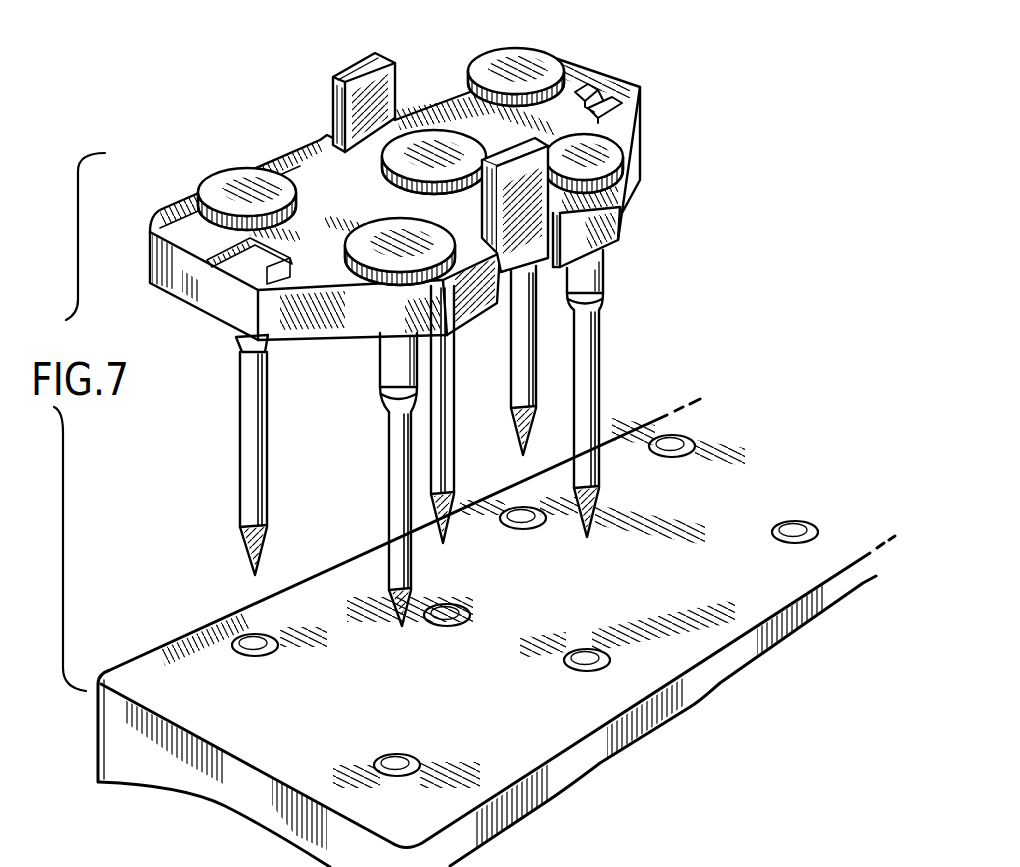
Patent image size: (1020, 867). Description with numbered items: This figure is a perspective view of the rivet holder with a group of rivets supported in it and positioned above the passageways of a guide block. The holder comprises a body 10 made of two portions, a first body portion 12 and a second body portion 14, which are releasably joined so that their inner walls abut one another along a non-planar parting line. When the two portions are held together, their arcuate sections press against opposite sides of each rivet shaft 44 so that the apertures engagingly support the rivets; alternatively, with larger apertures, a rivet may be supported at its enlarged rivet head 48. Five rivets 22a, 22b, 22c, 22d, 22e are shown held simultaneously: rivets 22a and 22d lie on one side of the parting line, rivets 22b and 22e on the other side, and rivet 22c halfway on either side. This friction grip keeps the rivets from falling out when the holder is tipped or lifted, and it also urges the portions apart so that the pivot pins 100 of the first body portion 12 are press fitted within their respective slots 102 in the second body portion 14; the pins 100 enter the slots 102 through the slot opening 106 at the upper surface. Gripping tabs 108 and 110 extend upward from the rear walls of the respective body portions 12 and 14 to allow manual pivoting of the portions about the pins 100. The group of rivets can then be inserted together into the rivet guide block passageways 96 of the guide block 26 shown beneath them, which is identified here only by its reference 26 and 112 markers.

The body 10 is at (236, 150).
The first body portion 12 is at (608, 68).
The second body portion 14 is at (632, 221).
The rivet 22a is at (266, 420).
The rivet 22b is at (389, 499).
The rivet 22c is at (446, 427).
The rivet 22d is at (470, 66).
The rivet 22e is at (600, 398).
The base plate 26 is at (183, 631).
The rivet shaft 44 is at (386, 368).
The enlarged rivet head 48 is at (426, 146).
The rivet guide block passageway 96 is at (275, 650).
The pivot pin 100 is at (624, 116).
The slot 102 is at (285, 257).
The slot opening 106 is at (193, 291).
The gripping tab 108 is at (380, 70).
The gripping tab 110 is at (517, 217).
The chamfer 112 is at (286, 152).